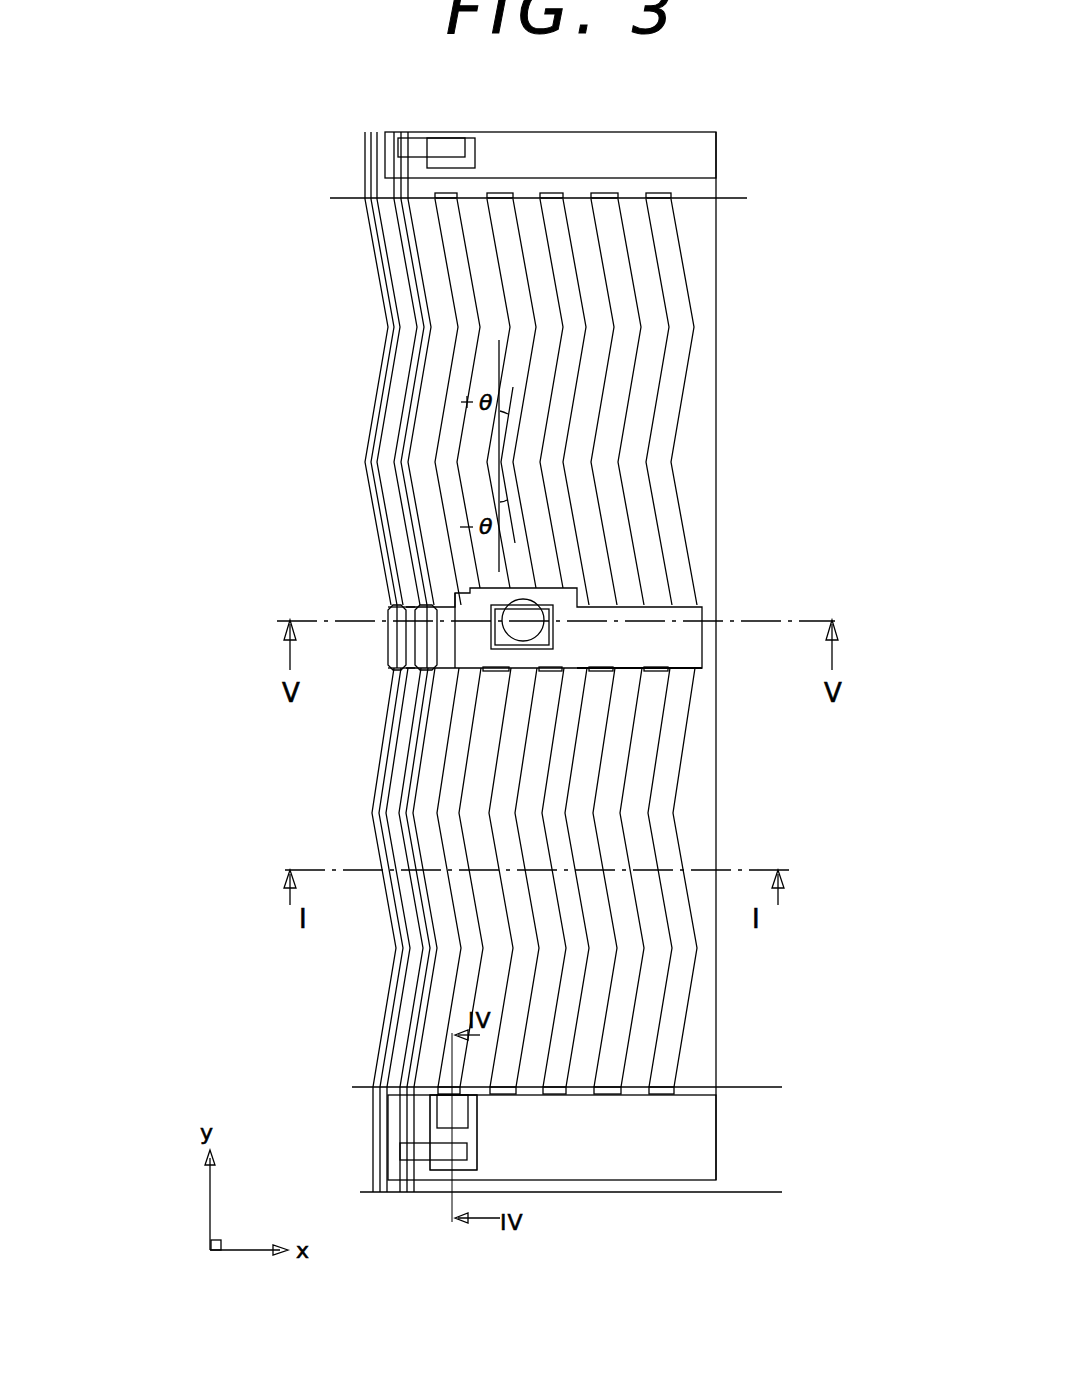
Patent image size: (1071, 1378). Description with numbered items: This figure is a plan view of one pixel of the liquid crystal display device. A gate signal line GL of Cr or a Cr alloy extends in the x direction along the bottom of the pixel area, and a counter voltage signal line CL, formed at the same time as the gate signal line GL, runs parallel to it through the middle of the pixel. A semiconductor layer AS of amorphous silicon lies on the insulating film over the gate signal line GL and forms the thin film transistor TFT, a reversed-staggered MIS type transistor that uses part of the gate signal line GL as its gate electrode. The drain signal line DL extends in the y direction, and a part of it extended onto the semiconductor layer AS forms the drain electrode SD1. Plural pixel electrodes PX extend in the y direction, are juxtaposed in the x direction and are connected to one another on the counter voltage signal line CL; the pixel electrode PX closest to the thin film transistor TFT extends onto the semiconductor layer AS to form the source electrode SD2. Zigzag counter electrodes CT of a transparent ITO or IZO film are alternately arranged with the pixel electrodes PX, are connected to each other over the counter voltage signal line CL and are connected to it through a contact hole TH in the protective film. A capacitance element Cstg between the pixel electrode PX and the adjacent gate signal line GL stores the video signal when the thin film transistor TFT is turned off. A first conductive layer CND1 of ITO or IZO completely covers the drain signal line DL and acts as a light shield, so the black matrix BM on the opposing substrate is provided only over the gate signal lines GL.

The black matrix BM is at (328, 198).
The gate signal line GL is at (727, 177).
The drain signal line DL is at (395, 578).
The first conductive layer CND1 is at (375, 462).
The pixel electrode PX is at (675, 378).
The counter electrode CT is at (617, 497).
The counter voltage signal line CL is at (733, 605).
The capacitance element Cstg is at (678, 657).
The contact hole TH is at (535, 627).
The semiconductor layer AS is at (395, 973).
The drain electrode SD1 is at (438, 1172).
The source electrode SD2 is at (477, 1113).
The thin film transistor TFT is at (469, 1180).